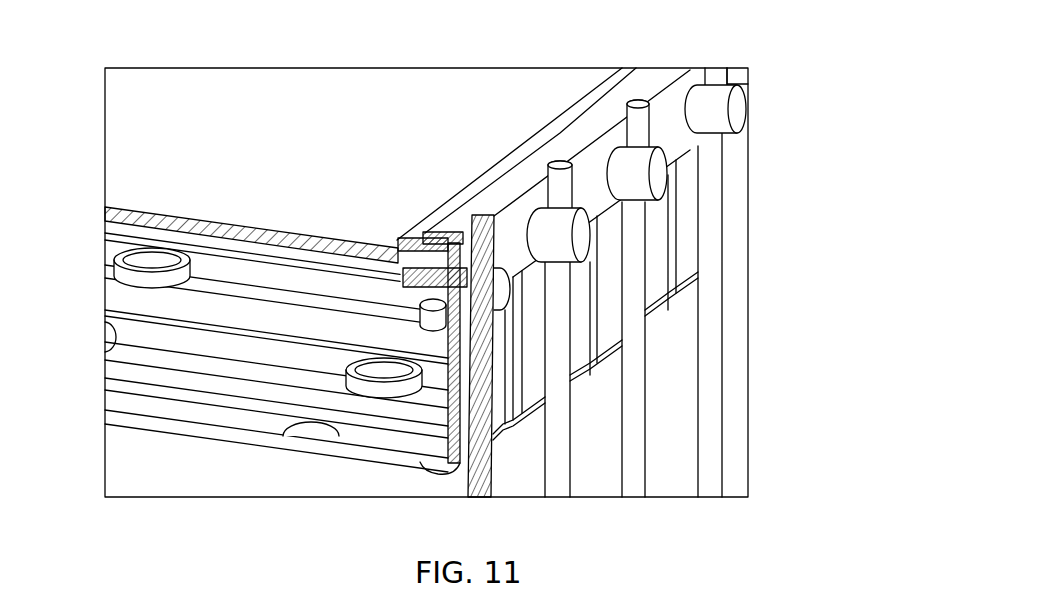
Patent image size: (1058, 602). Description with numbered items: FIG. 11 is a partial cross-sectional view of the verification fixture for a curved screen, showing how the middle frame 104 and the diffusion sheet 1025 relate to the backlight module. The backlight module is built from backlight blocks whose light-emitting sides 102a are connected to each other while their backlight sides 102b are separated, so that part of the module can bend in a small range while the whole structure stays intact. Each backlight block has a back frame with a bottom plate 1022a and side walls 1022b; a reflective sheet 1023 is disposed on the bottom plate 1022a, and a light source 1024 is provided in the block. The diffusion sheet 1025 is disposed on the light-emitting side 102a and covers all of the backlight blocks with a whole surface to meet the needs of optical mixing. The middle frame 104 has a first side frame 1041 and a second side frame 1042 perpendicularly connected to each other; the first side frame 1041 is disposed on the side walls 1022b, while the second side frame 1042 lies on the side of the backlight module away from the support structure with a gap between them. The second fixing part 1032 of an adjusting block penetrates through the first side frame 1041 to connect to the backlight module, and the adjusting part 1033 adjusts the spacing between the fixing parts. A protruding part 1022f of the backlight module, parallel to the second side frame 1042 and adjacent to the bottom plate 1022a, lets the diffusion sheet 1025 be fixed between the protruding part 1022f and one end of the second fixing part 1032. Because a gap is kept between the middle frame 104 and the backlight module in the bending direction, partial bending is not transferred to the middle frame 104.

The light-emitting side 102a is at (182, 218).
The backlight side 102b is at (173, 437).
The diffusion sheet 1025 is at (105, 212).
The light source 1024 is at (112, 267).
The reflective sheet 1023 is at (122, 412).
The bottom plate 1022a is at (447, 463).
The side walls 1022b is at (738, 187).
The protruding part 1022f is at (625, 67).
The second fixing part 1032 is at (573, 240).
The adjusting part 1033 is at (717, 335).
The middle frame 104 is at (878, 66).
The first side frame 1041 is at (750, 132).
The second side frame 1042 is at (690, 69).